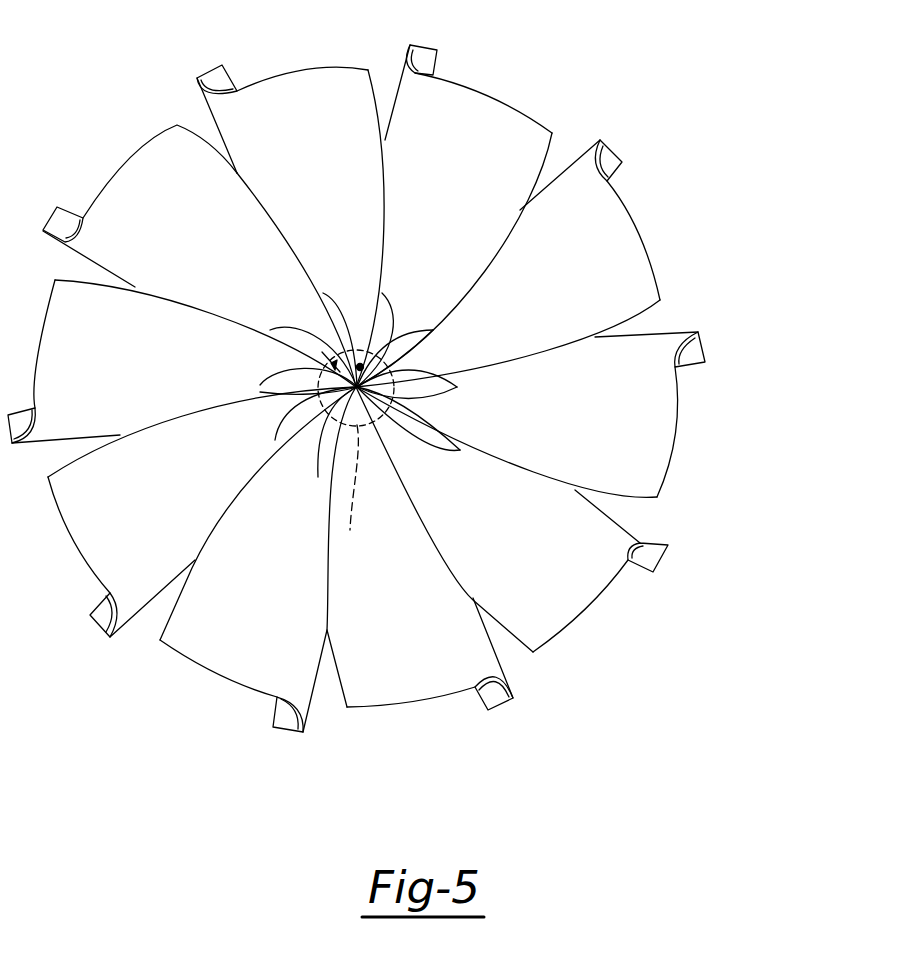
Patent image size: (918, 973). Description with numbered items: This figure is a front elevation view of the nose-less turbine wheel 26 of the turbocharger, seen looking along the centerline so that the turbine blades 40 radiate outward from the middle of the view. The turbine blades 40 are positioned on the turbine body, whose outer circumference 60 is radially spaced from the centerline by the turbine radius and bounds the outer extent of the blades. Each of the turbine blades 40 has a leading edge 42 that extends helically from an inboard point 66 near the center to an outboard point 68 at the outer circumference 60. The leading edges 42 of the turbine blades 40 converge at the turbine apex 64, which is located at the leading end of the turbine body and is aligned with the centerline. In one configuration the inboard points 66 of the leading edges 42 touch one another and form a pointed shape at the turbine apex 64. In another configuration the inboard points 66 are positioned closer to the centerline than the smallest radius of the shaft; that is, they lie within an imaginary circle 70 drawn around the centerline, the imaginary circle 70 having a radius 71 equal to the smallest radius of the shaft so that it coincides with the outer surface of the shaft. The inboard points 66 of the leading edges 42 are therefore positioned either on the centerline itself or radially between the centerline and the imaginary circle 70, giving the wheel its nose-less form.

The turbine wheel 26 is at (373, 375).
The turbine blades 40 is at (452, 658).
The leading edges 42 is at (638, 320).
The outer circumference 60 is at (473, 90).
The turbine apex 64 is at (440, 387).
The inboard point 66 is at (360, 367).
The outboard point 68 is at (177, 125).
The imaginary circle 70 is at (350, 493).
The radius 71 is at (257, 388).